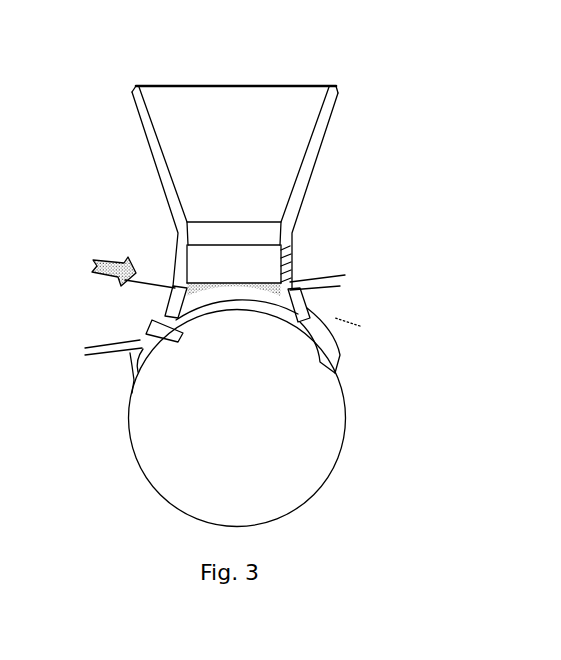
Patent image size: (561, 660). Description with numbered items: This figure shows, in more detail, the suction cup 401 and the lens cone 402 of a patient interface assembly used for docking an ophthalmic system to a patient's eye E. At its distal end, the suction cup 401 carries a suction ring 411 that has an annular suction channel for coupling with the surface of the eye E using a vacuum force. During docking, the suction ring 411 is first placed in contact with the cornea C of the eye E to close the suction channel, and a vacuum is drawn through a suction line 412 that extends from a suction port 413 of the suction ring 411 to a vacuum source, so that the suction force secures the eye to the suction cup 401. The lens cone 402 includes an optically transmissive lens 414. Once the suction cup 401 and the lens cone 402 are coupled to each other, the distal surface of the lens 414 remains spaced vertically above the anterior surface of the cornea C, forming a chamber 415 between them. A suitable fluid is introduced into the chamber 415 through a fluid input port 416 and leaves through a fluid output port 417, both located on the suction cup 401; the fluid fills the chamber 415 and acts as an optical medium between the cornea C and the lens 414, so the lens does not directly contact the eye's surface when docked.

The suction cup 401 is at (177, 300).
The lens cone 402 is at (302, 183).
The suction ring 411 is at (150, 322).
The suction line 412 is at (90, 357).
The suction port 413 is at (128, 350).
The lens 414 is at (270, 256).
The chamber 415 is at (278, 292).
The fluid input port 416 is at (155, 279).
The fluid output port 417 is at (341, 282).
The cornea C is at (333, 362).
The eye E is at (250, 415).